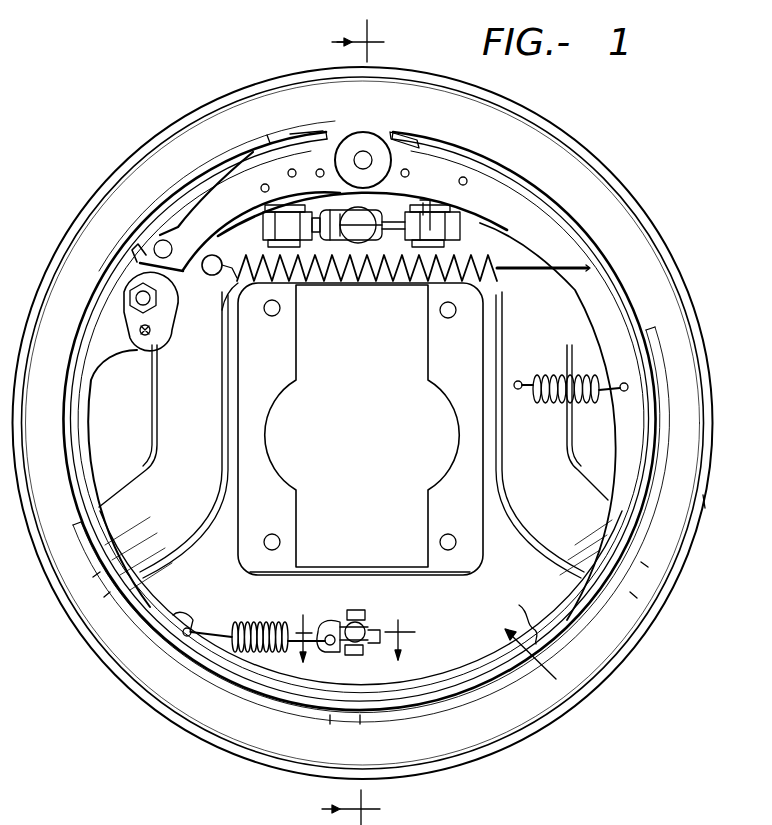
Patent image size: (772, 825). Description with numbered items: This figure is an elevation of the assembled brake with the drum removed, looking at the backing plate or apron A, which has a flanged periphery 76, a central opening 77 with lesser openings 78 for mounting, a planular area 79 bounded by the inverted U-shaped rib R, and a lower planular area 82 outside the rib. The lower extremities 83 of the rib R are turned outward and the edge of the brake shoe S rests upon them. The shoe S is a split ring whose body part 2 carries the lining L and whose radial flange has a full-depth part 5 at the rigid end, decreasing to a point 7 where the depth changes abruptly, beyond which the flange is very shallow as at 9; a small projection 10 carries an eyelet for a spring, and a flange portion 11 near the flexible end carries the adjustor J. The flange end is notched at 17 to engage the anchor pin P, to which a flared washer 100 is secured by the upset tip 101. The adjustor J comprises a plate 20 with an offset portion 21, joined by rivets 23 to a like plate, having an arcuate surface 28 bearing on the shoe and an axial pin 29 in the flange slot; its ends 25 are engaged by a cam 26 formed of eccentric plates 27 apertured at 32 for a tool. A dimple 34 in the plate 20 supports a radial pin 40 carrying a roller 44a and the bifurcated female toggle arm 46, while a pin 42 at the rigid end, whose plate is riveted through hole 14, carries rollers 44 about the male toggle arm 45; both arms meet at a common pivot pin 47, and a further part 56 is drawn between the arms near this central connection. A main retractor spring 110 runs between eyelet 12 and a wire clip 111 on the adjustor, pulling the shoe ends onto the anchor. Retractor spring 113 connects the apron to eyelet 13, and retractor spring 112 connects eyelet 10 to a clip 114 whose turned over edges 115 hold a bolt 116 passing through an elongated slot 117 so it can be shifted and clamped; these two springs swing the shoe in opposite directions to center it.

The body part 2 is at (196, 697).
The backing plate or apron A is at (625, 198).
The flanged periphery 76 is at (704, 502).
The lower planular area 82 is at (628, 609).
The flange part of full depth 5 is at (614, 340).
The brake lining L is at (580, 212).
The anchor pin P is at (363, 152).
The upset tip 101 is at (372, 165).
The hole 14 is at (458, 181).
The flared disc like washer 100 is at (388, 140).
The dimple 34 is at (293, 169).
The rivets 23 is at (318, 177).
The offset portion 21 is at (252, 180).
The arcuate surface 28 is at (218, 176).
The main retractor spring 110 is at (387, 282).
The pin 40 is at (227, 256).
The eyelet 12 is at (590, 273).
The roller 44a is at (273, 236).
The adjuster sleeve 56 is at (333, 232).
The common pivot pin 47 is at (372, 210).
The female toggle arm 46 is at (318, 207).
The male toggle arm 45 is at (433, 236).
The rollers 44 is at (457, 218).
The pin 42 is at (424, 205).
The central opening 77 is at (413, 383).
The lesser openings 78 is at (450, 317).
The wire clip 111 is at (242, 316).
The rib R is at (353, 435).
The adjustor J is at (378, 406).
The flange portion 11 is at (116, 368).
The aperture 32 is at (151, 330).
The retractor spring 113 is at (594, 416).
The lower extremities of rib 83 is at (569, 530).
The planular area 79 is at (505, 575).
The cam 26 is at (124, 310).
The eccentric plate 27 is at (133, 323).
The axial pin 29 is at (154, 248).
The plate ends 25 is at (140, 263).
The plate 20 is at (178, 222).
The eyelet 13 is at (628, 384).
The notch 17 is at (671, 480).
The point of abrupt depth change 7 is at (523, 618).
The brake shoe S is at (150, 602).
The shallow flange part 9 is at (137, 575).
The projection with eyelet 10 is at (190, 628).
The retractor spring 112 is at (262, 622).
The clip 114 is at (330, 632).
The bolt 116 is at (360, 625).
The turned over edges 115 is at (358, 612).
The elongated slot 117 is at (373, 655).